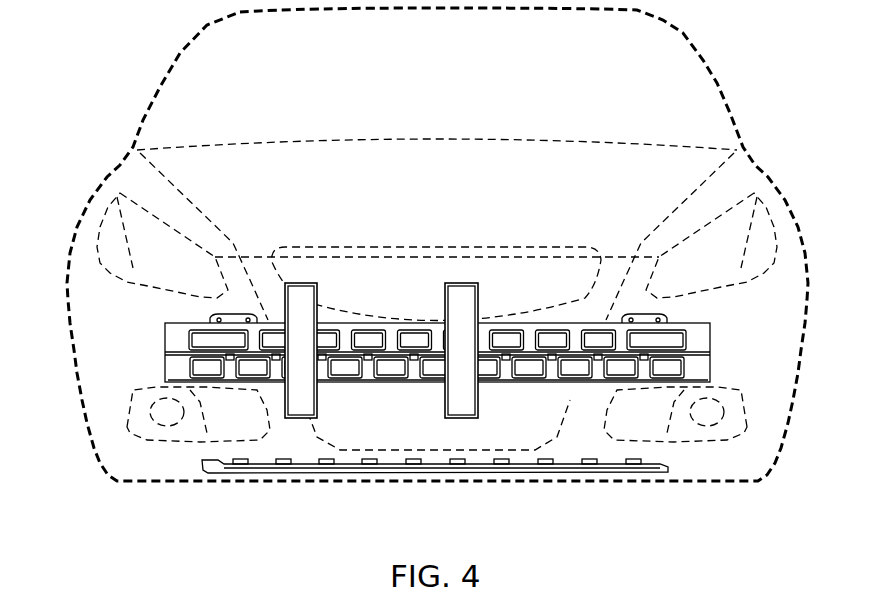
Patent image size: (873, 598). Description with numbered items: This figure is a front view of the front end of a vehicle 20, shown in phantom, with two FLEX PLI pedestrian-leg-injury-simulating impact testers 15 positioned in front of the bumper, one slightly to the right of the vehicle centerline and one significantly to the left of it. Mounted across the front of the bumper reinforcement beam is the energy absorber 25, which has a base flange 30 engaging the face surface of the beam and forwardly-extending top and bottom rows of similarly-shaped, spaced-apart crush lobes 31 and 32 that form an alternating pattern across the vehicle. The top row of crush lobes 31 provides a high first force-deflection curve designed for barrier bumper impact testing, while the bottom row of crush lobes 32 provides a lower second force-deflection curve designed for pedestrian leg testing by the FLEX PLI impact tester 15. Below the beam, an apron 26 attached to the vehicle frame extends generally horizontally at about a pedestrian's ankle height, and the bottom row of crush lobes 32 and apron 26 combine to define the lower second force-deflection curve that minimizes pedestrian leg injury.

The vehicle 20 is at (130, 84).
The energy absorber 25 is at (432, 395).
The FLEX PLI impact tester 15 is at (305, 295).
The apron 26 is at (243, 470).
The base flange 30 is at (553, 378).
The top row of crush lobes 31 is at (670, 337).
The bottom row of crush lobes 32 is at (673, 367).